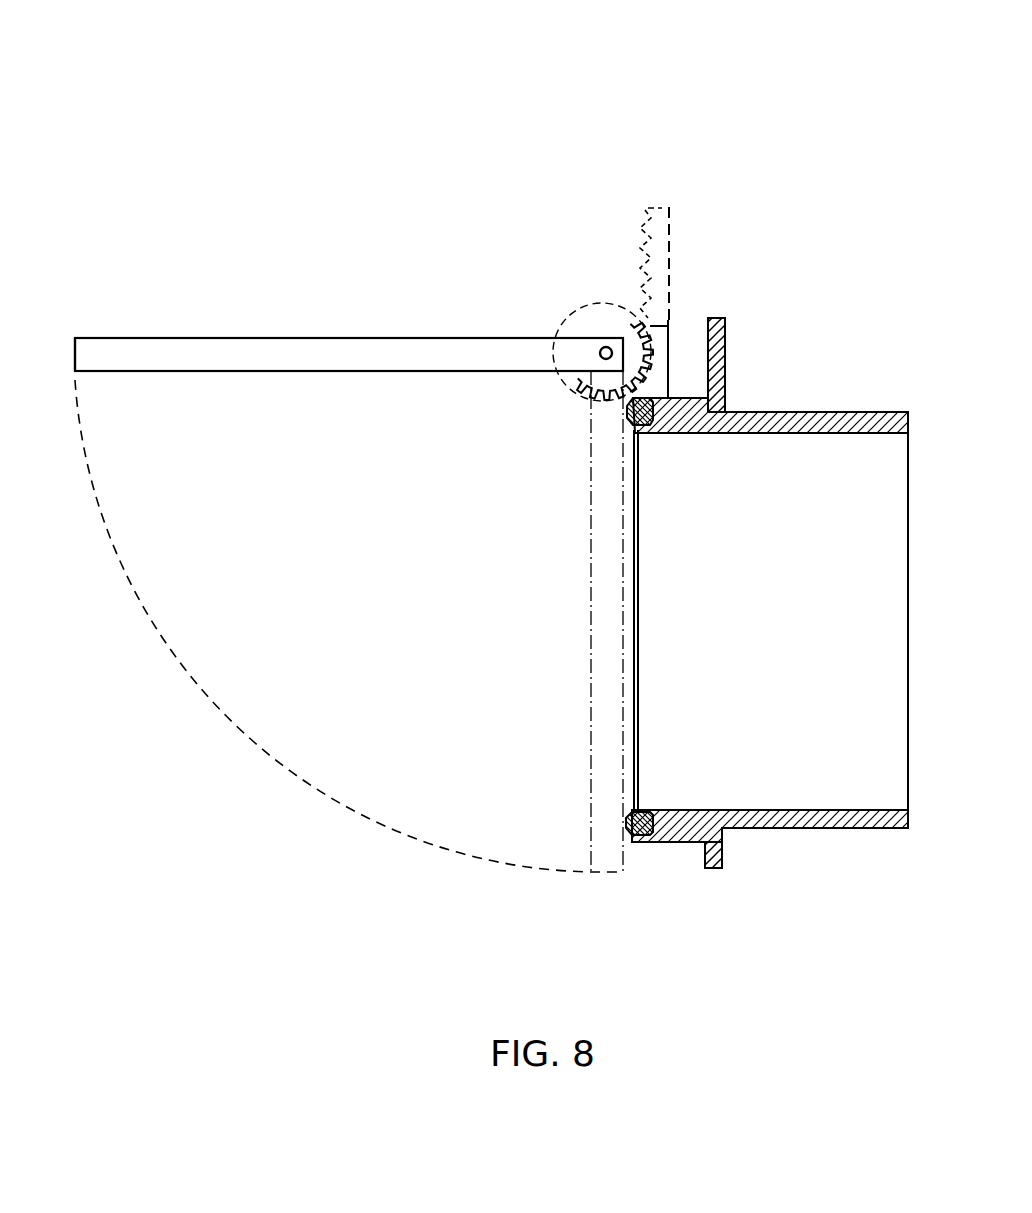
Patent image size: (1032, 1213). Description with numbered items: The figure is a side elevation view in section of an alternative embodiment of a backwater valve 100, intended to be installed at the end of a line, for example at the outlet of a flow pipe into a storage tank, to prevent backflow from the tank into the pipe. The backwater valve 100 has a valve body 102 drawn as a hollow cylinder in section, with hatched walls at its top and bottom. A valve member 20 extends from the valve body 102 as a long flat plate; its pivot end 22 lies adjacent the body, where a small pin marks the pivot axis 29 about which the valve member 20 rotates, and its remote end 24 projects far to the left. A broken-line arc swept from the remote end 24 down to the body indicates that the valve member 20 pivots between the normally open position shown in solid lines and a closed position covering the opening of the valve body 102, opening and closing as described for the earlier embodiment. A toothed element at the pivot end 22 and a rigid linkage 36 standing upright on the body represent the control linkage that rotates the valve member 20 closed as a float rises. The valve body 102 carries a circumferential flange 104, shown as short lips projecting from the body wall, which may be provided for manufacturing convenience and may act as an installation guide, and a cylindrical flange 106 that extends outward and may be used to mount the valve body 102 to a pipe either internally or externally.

The backwater valve 100 is at (262, 89).
The valve member 20 is at (335, 371).
The pivot end 22 is at (598, 344).
The remote end 24 is at (82, 338).
The pivot axis 29 is at (611, 346).
The rigid linkage 36 is at (668, 357).
The valve body 102 is at (822, 415).
The circumferential flange 104 is at (722, 860).
The cylindrical flange 106 is at (818, 828).